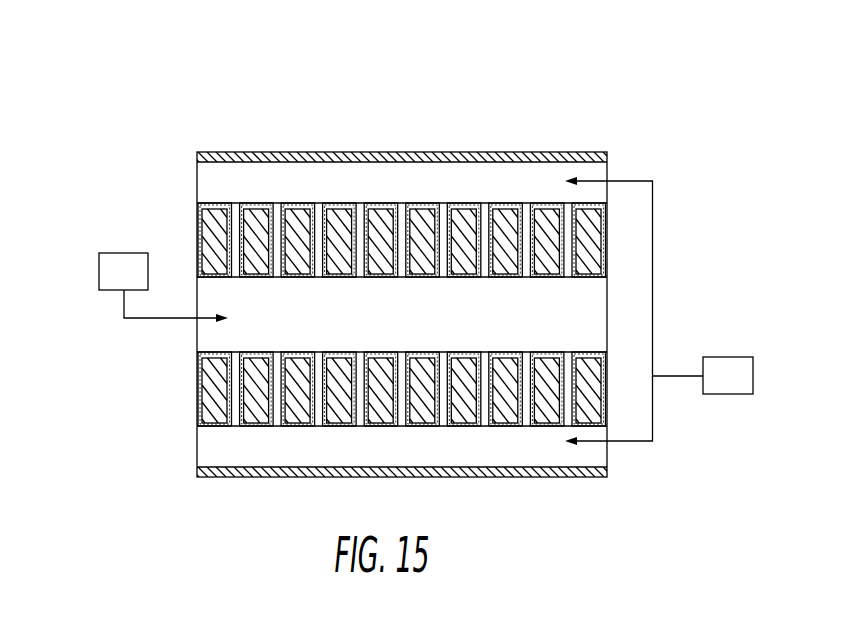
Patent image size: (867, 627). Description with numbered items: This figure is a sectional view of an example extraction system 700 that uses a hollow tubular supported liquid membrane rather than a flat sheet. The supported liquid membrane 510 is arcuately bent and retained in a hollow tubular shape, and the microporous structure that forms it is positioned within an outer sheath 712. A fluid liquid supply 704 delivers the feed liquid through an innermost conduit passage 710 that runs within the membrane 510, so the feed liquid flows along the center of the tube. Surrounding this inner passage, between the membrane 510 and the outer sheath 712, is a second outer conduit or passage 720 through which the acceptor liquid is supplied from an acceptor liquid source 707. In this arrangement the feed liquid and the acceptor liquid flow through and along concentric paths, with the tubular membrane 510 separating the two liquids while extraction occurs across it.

The extraction system 700 is at (170, 85).
The second outer conduit or passage 720 is at (258, 170).
The outer sheath 712 is at (333, 478).
The supported liquid membrane 510 is at (483, 202).
The innermost conduit passage 710 is at (218, 334).
The fluid liquid supply 704 is at (112, 252).
The acceptor liquid source 707 is at (711, 357).